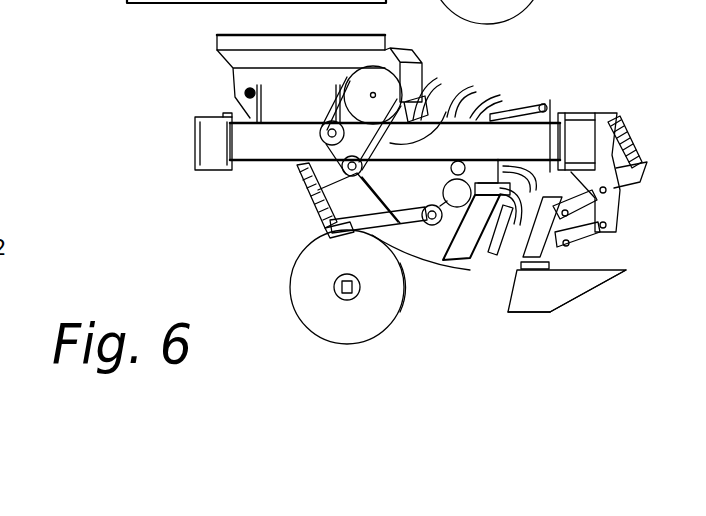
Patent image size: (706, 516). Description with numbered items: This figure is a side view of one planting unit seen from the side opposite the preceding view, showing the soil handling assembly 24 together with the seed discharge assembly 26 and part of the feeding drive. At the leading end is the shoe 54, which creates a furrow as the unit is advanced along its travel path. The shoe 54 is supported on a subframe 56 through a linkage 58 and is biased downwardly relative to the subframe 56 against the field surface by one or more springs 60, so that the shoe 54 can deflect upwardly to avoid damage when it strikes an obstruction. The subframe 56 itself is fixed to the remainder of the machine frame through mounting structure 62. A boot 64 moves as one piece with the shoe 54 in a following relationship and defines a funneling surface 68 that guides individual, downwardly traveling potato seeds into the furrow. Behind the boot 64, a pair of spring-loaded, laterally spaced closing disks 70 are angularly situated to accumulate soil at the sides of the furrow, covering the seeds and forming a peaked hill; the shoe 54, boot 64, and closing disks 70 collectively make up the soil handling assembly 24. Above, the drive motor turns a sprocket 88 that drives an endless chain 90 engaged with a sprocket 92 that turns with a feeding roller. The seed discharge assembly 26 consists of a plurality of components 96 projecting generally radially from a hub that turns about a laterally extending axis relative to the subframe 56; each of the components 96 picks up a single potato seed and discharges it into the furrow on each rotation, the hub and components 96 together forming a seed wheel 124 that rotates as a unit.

The soil handling assembly 24 is at (409, 321).
The seed discharge assembly 26 is at (517, 244).
The shoe 54 is at (585, 297).
The subframe 56 is at (537, 134).
The linkage 58 is at (601, 243).
The spring 60 is at (642, 136).
The mounting structure 62 is at (210, 156).
The boot 64 is at (537, 312).
The funneling surface 68 is at (508, 289).
The closing disks 70 is at (308, 293).
The sprocket 88 is at (307, 191).
The endless chain 90 is at (443, 93).
The sprocket 92 is at (378, 74).
The components 96 is at (462, 86).
The seed wheel 124 is at (523, 96).